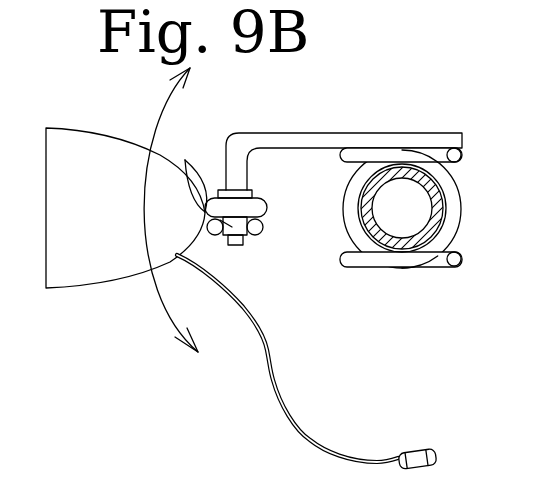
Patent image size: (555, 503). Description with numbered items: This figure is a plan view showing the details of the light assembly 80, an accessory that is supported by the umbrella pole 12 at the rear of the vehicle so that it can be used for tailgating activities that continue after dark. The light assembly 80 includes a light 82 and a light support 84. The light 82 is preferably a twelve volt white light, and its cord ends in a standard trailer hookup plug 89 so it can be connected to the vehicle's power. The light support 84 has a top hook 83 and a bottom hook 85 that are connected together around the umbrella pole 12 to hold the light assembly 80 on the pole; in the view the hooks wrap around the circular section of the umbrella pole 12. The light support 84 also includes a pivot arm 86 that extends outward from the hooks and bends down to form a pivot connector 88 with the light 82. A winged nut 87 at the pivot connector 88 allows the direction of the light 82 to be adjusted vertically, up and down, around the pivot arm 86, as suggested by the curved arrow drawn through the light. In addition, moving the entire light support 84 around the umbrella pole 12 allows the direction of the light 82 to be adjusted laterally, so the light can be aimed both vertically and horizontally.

The light assembly 80 is at (355, 105).
The light 82 is at (98, 262).
The top hook 83 is at (457, 198).
The light support 84 is at (467, 240).
The bottom hook 85 is at (352, 220).
The pivot arm 86 is at (320, 140).
The winged nut 87 is at (185, 160).
The pivot connector 88 is at (232, 253).
The standard trailer hookup plug 89 is at (417, 450).
The umbrella pole 12 is at (411, 252).